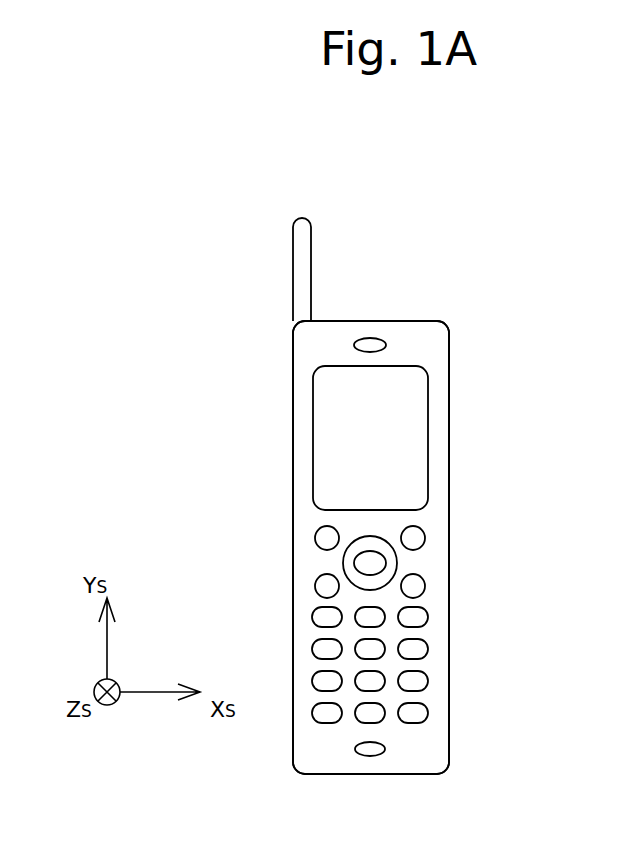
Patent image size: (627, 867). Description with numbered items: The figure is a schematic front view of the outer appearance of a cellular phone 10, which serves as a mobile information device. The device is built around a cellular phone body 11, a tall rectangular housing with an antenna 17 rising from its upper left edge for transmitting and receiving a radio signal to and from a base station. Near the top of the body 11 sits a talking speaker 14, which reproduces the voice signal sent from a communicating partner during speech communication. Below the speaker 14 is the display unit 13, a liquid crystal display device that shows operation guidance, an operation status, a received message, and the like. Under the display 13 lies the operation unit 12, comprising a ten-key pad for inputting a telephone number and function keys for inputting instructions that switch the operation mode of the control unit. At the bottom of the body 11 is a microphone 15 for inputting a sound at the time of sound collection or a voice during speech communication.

The cellular phone 10 is at (448, 199).
The cellular phone body 11 is at (449, 390).
The operation unit 12 is at (424, 603).
The display unit 13 is at (313, 427).
The talking speaker 14 is at (386, 340).
The microphone 15 is at (378, 755).
The antenna 17 is at (293, 282).